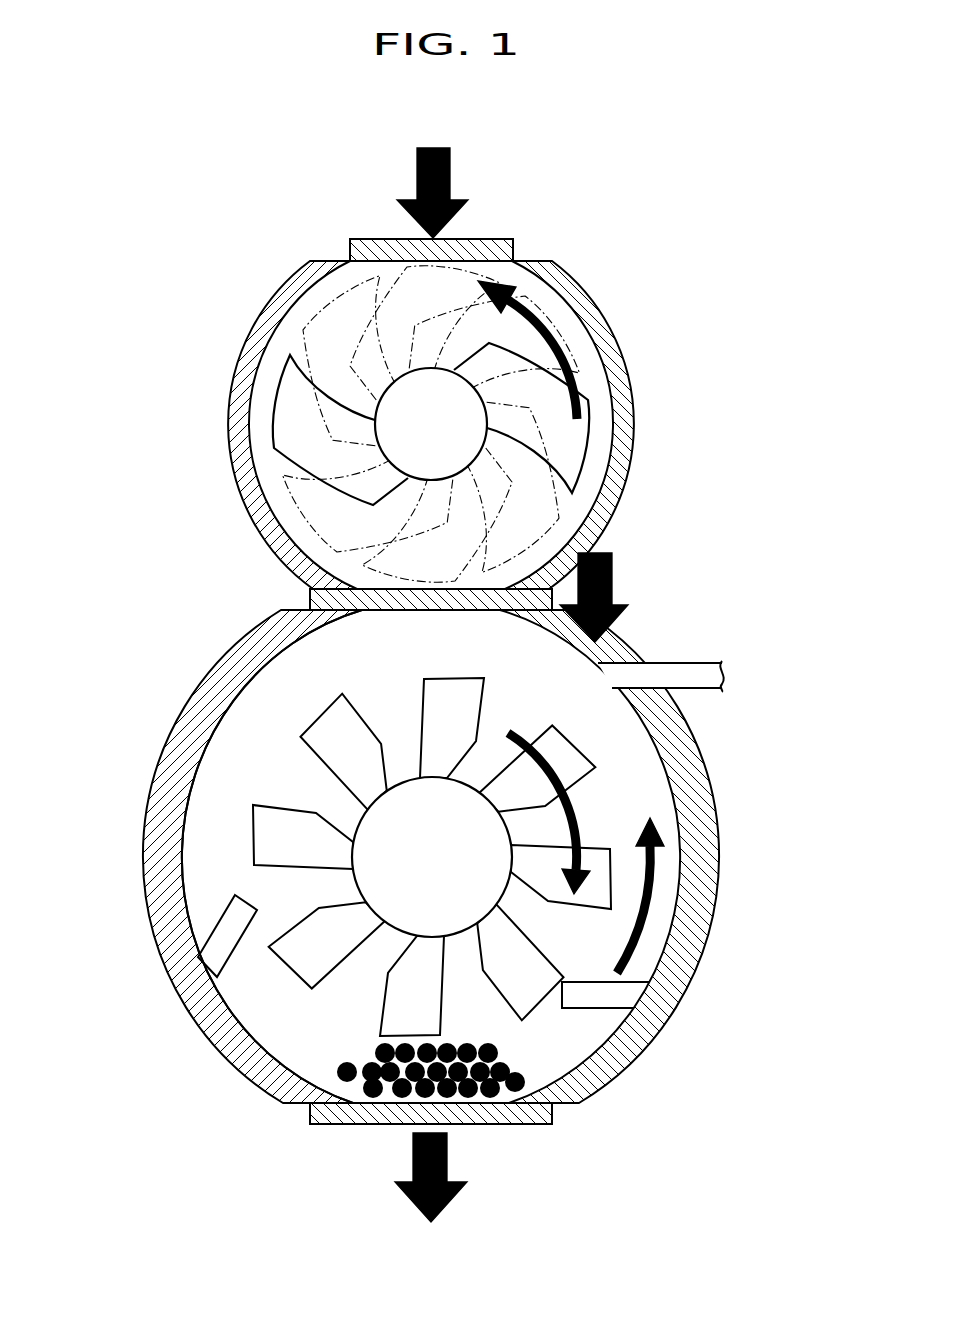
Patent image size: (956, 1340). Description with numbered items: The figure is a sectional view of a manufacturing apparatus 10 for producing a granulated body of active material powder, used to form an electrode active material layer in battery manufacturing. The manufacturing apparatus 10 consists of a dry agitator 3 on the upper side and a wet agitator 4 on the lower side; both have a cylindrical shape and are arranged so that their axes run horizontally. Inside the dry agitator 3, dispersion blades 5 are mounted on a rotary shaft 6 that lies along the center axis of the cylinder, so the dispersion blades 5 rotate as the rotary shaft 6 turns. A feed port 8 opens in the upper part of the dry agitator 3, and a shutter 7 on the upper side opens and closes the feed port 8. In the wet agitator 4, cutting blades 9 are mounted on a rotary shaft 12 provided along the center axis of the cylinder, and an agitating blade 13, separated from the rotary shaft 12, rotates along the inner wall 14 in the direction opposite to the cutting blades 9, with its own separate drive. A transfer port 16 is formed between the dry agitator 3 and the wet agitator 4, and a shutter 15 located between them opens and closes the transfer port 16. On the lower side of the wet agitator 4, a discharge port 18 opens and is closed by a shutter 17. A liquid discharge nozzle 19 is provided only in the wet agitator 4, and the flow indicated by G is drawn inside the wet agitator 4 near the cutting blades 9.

The dry agitator 3 is at (644, 344).
The wet agitator 4 is at (731, 829).
The dispersion blades 5 is at (288, 405).
The rotary shaft 6 is at (445, 422).
The shutter 7 is at (497, 250).
The feed port 8 is at (420, 258).
The cutting blades 9 is at (278, 838).
The manufacturing apparatus 10 is at (662, 225).
The rotary shaft 12 is at (403, 866).
The agitating blade 13 is at (597, 993).
The inner wall 14 is at (286, 680).
The shutter 15 is at (502, 552).
The transfer port 16 is at (398, 580).
The shutter 17 is at (493, 1115).
The discharge port 18 is at (413, 1103).
The liquid discharge nozzle 19 is at (683, 668).
The gas flow G is at (577, 803).